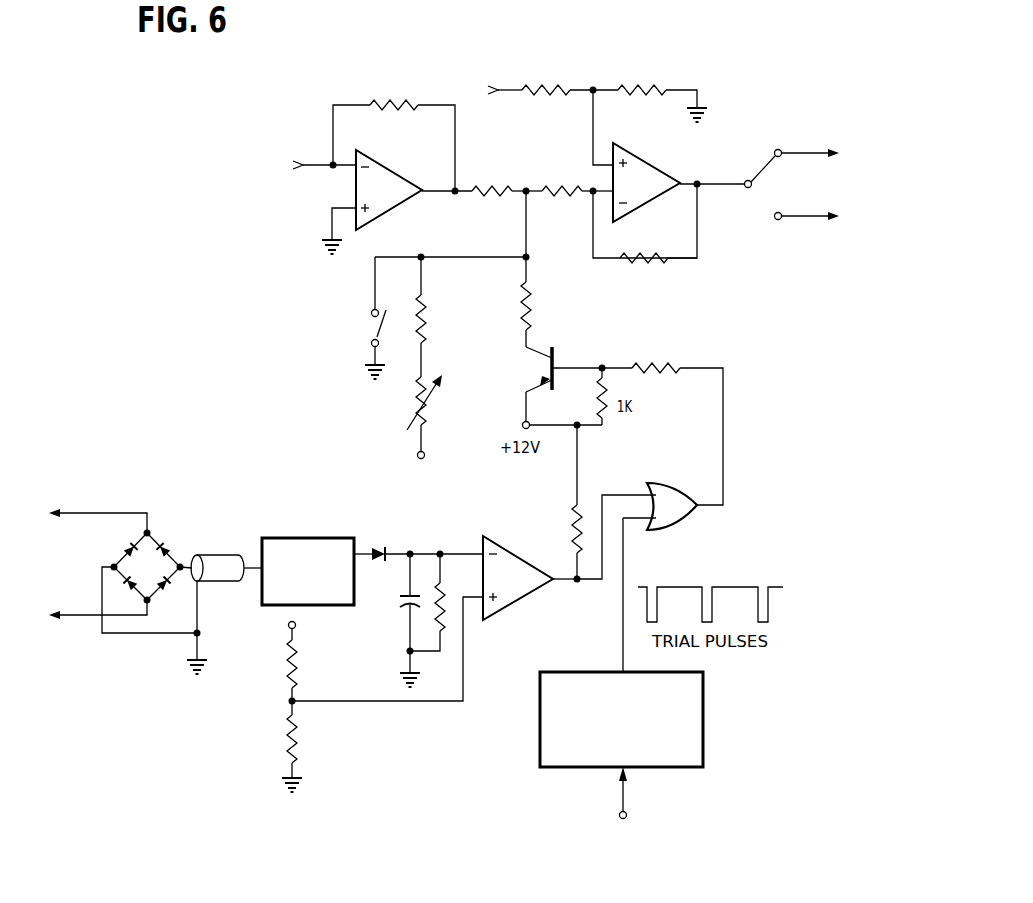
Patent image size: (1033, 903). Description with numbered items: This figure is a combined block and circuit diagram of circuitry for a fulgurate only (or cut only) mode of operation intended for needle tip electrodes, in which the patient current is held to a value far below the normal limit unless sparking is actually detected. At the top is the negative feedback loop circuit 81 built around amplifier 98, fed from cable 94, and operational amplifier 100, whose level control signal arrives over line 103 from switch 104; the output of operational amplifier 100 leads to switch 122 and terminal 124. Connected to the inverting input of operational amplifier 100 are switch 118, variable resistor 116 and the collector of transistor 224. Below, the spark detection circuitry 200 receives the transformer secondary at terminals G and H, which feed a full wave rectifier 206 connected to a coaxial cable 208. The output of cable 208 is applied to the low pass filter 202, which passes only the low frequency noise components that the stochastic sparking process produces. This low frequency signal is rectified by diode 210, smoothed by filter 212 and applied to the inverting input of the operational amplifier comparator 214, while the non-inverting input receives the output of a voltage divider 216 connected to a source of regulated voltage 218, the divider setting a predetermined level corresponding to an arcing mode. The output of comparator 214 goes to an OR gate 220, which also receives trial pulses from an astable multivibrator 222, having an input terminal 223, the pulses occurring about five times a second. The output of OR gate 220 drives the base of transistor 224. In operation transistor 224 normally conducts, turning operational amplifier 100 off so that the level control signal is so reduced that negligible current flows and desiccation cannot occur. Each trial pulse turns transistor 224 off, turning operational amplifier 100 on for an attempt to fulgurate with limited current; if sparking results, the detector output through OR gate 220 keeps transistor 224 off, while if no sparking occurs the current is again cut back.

The cable 94 is at (266, 176).
The amplifier 98 is at (392, 195).
The negative feedback loop circuit 81 is at (536, 167).
The switch 104 is at (467, 65).
The line 103 is at (513, 91).
The operational amplifier 100 is at (640, 172).
The switch 122 is at (782, 150).
The terminal 124 is at (778, 221).
The switch 118 is at (371, 325).
The variable resistor 116 is at (418, 400).
The transistor 224 is at (545, 358).
The OR gate 220 is at (668, 490).
The spark detection circuitry 200 is at (218, 489).
The full wave rectifier 206 is at (123, 556).
The coaxial cable 208 is at (221, 562).
The low pass filter 202 is at (321, 544).
The diode 210 is at (380, 550).
The filter 212 is at (428, 570).
The operational amplifier comparator 214 is at (513, 568).
The source of regulated voltage 218 is at (295, 627).
The voltage divider 216 is at (287, 668).
The astable multivibrator 222 is at (692, 730).
The input terminal 223 is at (627, 815).